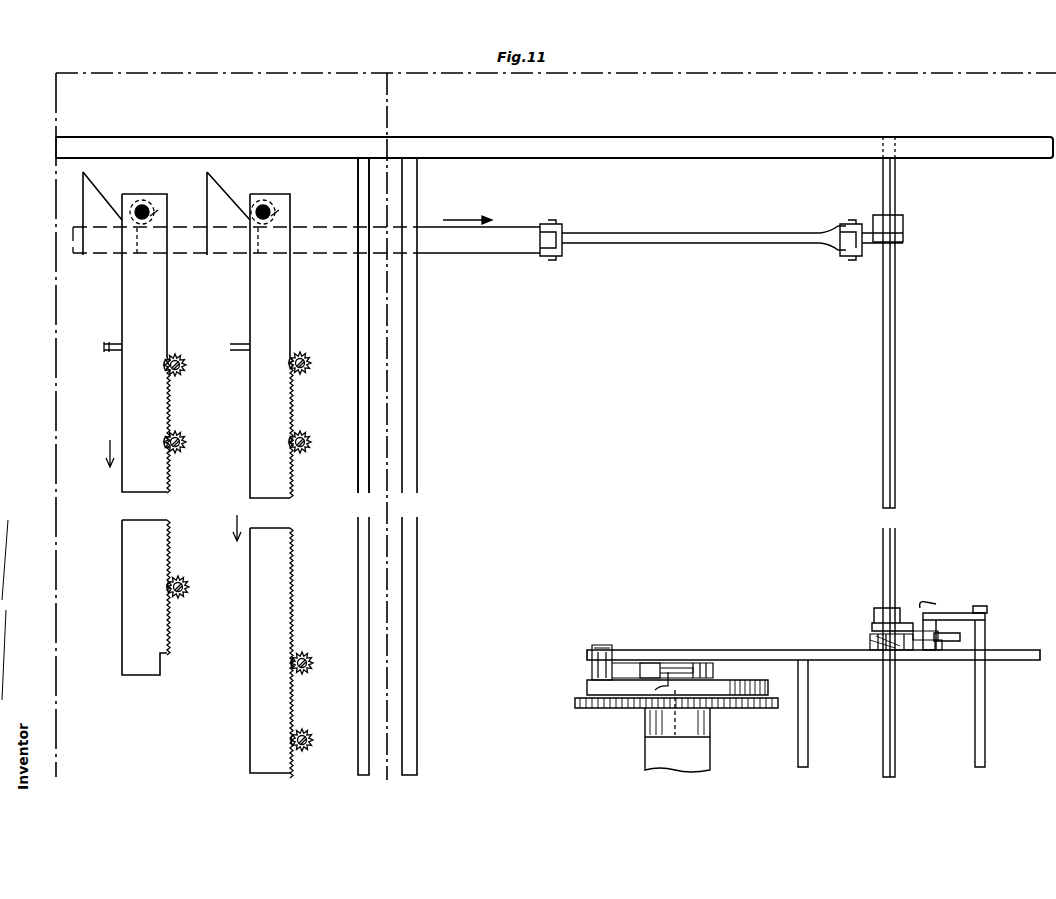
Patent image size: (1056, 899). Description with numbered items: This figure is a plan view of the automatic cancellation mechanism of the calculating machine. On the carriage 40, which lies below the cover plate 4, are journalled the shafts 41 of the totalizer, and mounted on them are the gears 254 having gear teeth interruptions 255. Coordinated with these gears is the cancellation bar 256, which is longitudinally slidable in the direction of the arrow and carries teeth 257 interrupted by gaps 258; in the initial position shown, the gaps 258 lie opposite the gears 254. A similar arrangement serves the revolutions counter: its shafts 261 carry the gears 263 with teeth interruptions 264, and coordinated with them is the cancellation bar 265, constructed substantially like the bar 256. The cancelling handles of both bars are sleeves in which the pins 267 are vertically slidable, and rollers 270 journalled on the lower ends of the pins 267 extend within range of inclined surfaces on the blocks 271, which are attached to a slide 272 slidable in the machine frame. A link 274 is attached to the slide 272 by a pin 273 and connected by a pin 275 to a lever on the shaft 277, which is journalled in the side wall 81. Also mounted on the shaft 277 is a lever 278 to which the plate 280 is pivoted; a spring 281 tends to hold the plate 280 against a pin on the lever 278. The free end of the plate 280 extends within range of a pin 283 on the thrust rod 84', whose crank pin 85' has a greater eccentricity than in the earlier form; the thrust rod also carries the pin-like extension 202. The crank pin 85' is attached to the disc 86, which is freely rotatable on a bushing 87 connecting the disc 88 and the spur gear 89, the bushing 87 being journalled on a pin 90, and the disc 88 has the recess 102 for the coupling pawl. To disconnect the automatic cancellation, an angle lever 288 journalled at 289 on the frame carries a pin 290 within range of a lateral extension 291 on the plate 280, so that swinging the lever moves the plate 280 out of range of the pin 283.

The carriage 40 is at (320, 78).
The cover plate 4 is at (960, 80).
The side wall 81 is at (778, 146).
The block 271 is at (92, 208).
The cancellation bar 265 is at (129, 288).
The cancellation bar 256 is at (285, 306).
The gap 258 is at (286, 588).
The pin 267 is at (150, 204).
The roller 270 is at (160, 212).
The gear teeth interruption 264 is at (165, 363).
The gear 263 is at (188, 366).
The shaft 261 is at (182, 356).
The teeth 257 is at (170, 406).
The gear teeth interruption 255 is at (290, 360).
The shaft 41 is at (308, 358).
The gear 254 is at (308, 368).
The slide 272 is at (457, 249).
The pin 273 is at (552, 258).
The link 274 is at (696, 241).
The pin 275 is at (846, 252).
The shaft 277 is at (890, 380).
The lever 278 is at (905, 622).
The spring 281 is at (898, 664).
The angle lever 288 is at (950, 614).
The journal 289 is at (984, 626).
The pin 290 is at (930, 612).
The lateral extension 291 is at (926, 652).
The plate 280 is at (950, 642).
The pin 283 is at (940, 660).
The thrust rod 84' is at (1012, 676).
The recess 102 is at (657, 650).
The pin-like extension 202 is at (808, 734).
The crank pin 85' is at (619, 646).
The disc 88 is at (700, 668).
The disc 86 is at (730, 688).
The spur gear 89 is at (758, 708).
The bushing 87 is at (638, 712).
The pin 90 is at (680, 716).